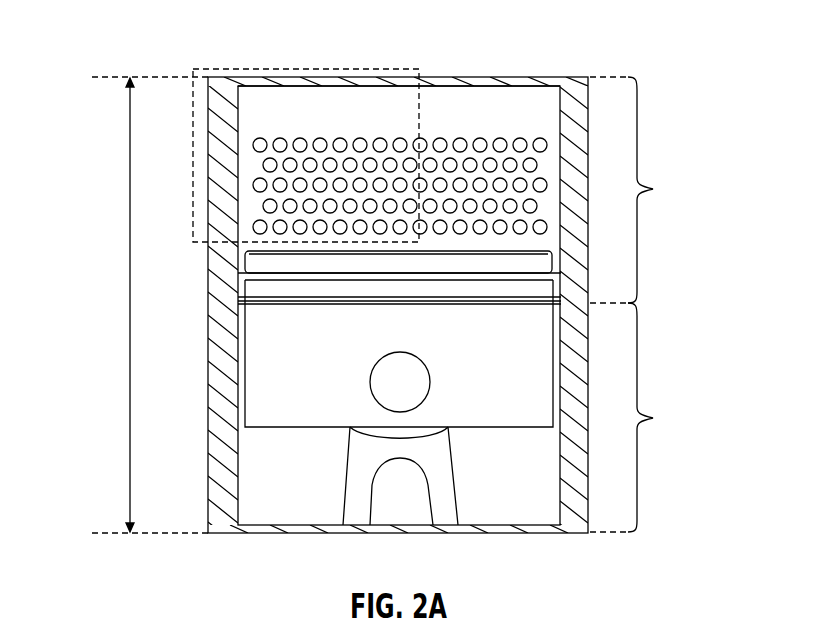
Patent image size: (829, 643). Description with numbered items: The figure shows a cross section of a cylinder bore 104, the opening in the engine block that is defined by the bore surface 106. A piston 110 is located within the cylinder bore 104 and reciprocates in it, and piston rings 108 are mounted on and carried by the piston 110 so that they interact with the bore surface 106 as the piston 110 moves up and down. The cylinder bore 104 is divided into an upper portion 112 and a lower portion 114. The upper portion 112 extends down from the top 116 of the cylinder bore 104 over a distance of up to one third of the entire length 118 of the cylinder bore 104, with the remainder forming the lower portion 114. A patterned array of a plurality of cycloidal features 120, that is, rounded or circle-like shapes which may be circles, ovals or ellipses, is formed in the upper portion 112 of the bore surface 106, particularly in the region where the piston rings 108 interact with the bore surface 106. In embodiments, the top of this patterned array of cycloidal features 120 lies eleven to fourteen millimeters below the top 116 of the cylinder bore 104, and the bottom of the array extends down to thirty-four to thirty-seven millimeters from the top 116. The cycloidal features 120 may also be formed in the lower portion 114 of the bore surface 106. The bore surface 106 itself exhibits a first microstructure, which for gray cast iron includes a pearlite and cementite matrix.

The cylinder bore 104 is at (543, 75).
The bore surface 106 is at (457, 97).
The piston rings 108 is at (472, 305).
The piston 110 is at (290, 420).
The upper portion 112 is at (646, 190).
The lower portion 114 is at (646, 417).
The top of the cylinder bore 116 is at (280, 77).
The entire length of the cylinder bore 118 is at (128, 290).
The cycloidal features 120 is at (340, 143).